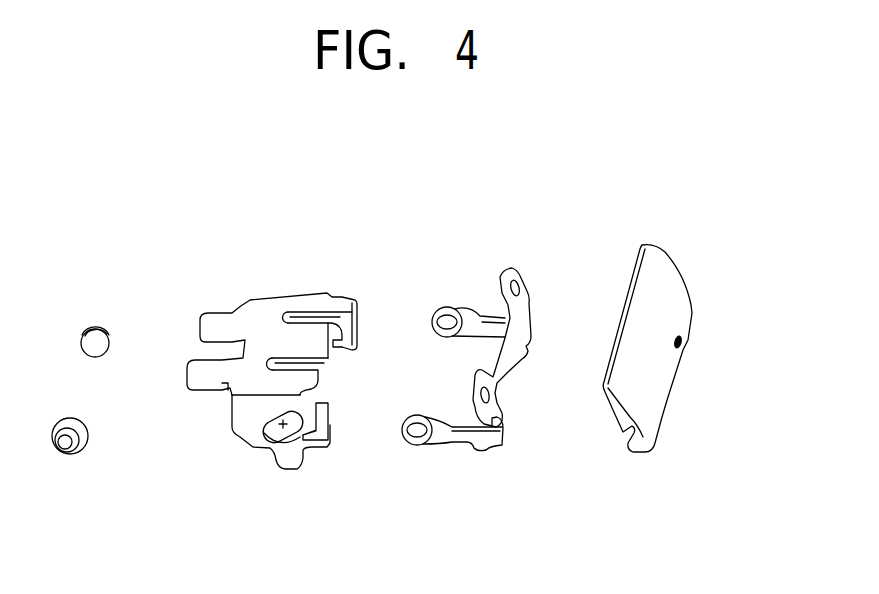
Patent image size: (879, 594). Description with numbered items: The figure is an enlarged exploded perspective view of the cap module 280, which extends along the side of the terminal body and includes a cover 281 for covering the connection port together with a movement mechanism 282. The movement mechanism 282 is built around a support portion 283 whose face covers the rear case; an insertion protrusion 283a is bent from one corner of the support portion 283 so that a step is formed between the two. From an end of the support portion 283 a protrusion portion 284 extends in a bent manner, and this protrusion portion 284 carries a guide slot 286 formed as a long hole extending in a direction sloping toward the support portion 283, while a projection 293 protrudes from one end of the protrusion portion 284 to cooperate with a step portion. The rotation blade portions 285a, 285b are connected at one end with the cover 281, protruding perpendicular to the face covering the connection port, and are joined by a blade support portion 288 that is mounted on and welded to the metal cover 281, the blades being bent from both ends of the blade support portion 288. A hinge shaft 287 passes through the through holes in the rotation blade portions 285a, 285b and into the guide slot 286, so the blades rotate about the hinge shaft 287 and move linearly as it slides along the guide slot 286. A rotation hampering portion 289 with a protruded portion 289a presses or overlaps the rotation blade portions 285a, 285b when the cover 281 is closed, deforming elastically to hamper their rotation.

The cap module 280 is at (590, 200).
The cover 281 is at (656, 353).
The movement mechanism 282 is at (376, 262).
The support portion 283 is at (262, 313).
The insertion protrusion 283a is at (200, 378).
The protrusion portion 284 is at (247, 446).
The rotation blade portion 285a is at (443, 441).
The rotation blade portion 285b is at (470, 325).
The guide slot 286 is at (294, 431).
The hinge shaft 287 is at (65, 450).
The blade support portion 288 is at (510, 373).
The rotation hampering portion 289 is at (332, 405).
The protruded portion 289a is at (330, 438).
The projection 293 is at (283, 463).